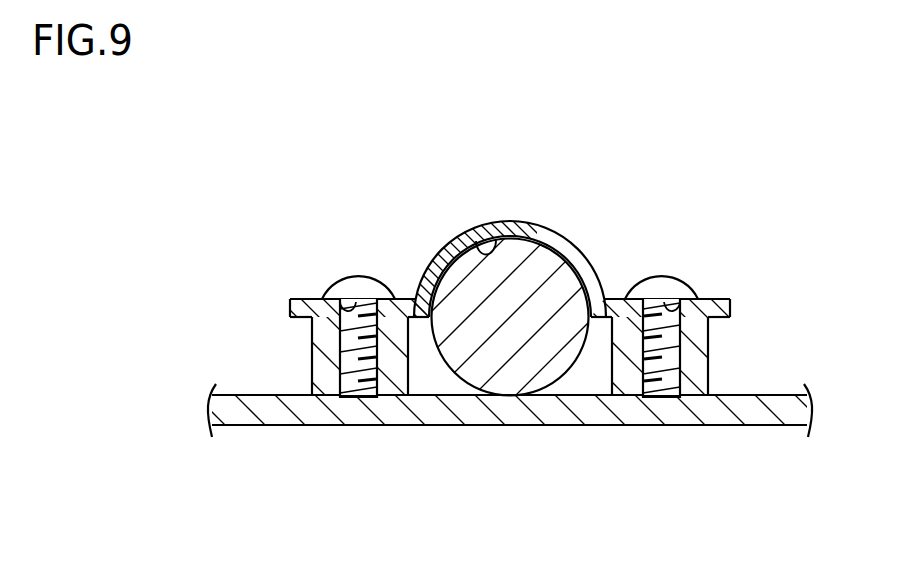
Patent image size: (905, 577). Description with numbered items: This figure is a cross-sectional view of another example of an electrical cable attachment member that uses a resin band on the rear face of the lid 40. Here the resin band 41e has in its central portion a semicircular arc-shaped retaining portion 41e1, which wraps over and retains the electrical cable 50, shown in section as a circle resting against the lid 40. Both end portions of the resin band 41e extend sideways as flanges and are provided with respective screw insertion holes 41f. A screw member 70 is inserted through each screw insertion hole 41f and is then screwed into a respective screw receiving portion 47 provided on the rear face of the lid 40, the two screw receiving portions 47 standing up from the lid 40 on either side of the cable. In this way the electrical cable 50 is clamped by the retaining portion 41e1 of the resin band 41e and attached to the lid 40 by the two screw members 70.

The lid 40 is at (590, 422).
The screw receiving portion 47 is at (315, 353).
The screw member 70 is at (375, 285).
The screw insertion hole 41f is at (352, 303).
The electrical cable 50 is at (495, 360).
The resin band 41e is at (565, 237).
The semicircular arc-shaped retaining portion 41e1 is at (497, 238).